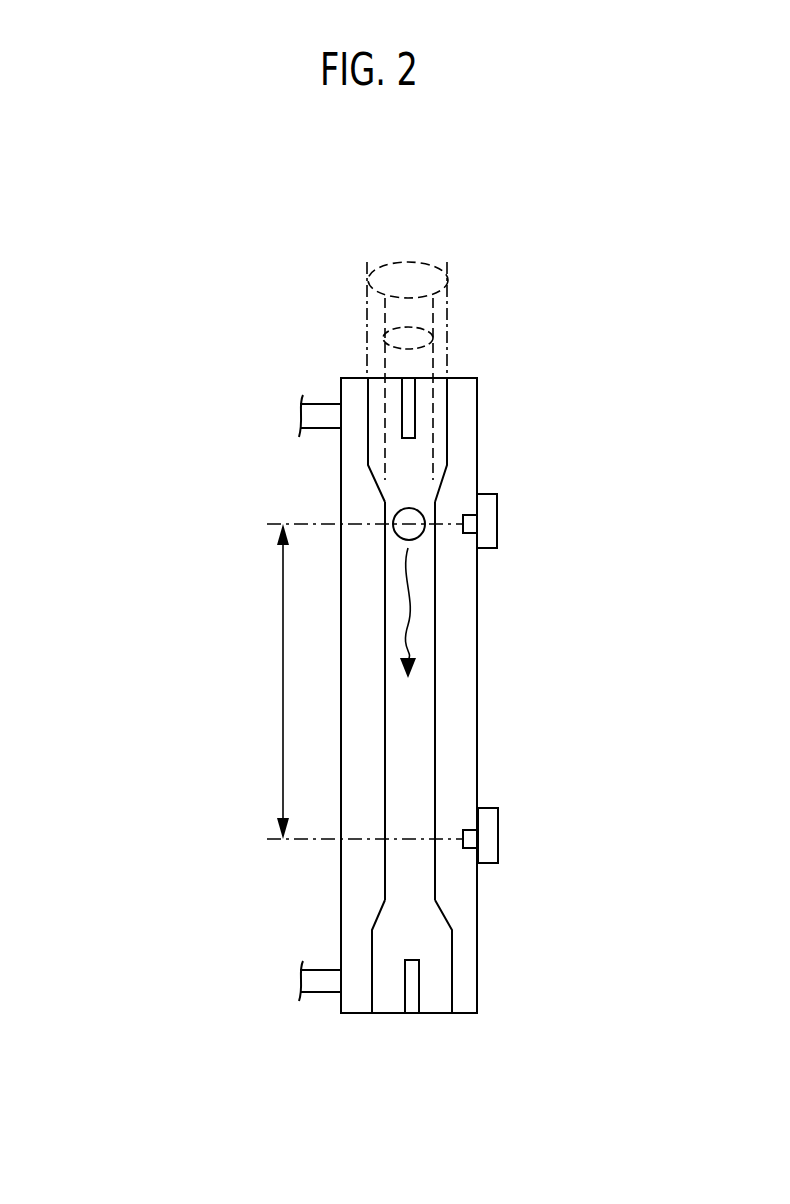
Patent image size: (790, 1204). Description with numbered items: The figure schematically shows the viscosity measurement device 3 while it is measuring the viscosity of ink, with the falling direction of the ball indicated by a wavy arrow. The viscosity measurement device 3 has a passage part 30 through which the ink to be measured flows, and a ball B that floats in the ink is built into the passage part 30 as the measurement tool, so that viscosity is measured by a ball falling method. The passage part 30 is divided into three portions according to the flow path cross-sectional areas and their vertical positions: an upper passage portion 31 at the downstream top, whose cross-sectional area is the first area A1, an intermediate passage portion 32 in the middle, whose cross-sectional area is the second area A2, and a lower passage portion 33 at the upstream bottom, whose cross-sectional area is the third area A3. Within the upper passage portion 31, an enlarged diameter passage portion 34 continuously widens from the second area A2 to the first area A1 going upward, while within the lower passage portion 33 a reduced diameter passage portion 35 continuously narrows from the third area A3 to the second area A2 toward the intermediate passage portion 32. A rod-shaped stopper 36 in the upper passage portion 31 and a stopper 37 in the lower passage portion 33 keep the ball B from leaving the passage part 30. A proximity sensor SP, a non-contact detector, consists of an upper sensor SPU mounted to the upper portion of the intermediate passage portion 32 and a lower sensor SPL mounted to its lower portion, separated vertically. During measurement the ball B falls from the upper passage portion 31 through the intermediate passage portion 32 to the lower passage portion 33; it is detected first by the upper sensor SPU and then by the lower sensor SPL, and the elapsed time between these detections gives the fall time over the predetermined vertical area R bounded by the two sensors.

The viscosity measurement device 3 is at (640, 226).
The passage part 30 is at (110, 1018).
The upper passage portion 31 is at (199, 378).
The intermediate passage portion 32 is at (199, 898).
The lower passage portion 33 is at (199, 903).
The enlarged diameter passage portion 34 is at (447, 478).
The reduced diameter passage portion 35 is at (447, 912).
The stopper 36 is at (413, 408).
The stopper 37 is at (413, 988).
The first area A1 is at (430, 262).
The third area A3 is at (531, 239).
The second area A2 is at (445, 323).
The ball B is at (397, 513).
The predetermined vertical area R is at (282, 678).
The upper sensor SPU is at (497, 537).
The lower sensor SPL is at (490, 830).
The proximity sensor SP is at (604, 573).